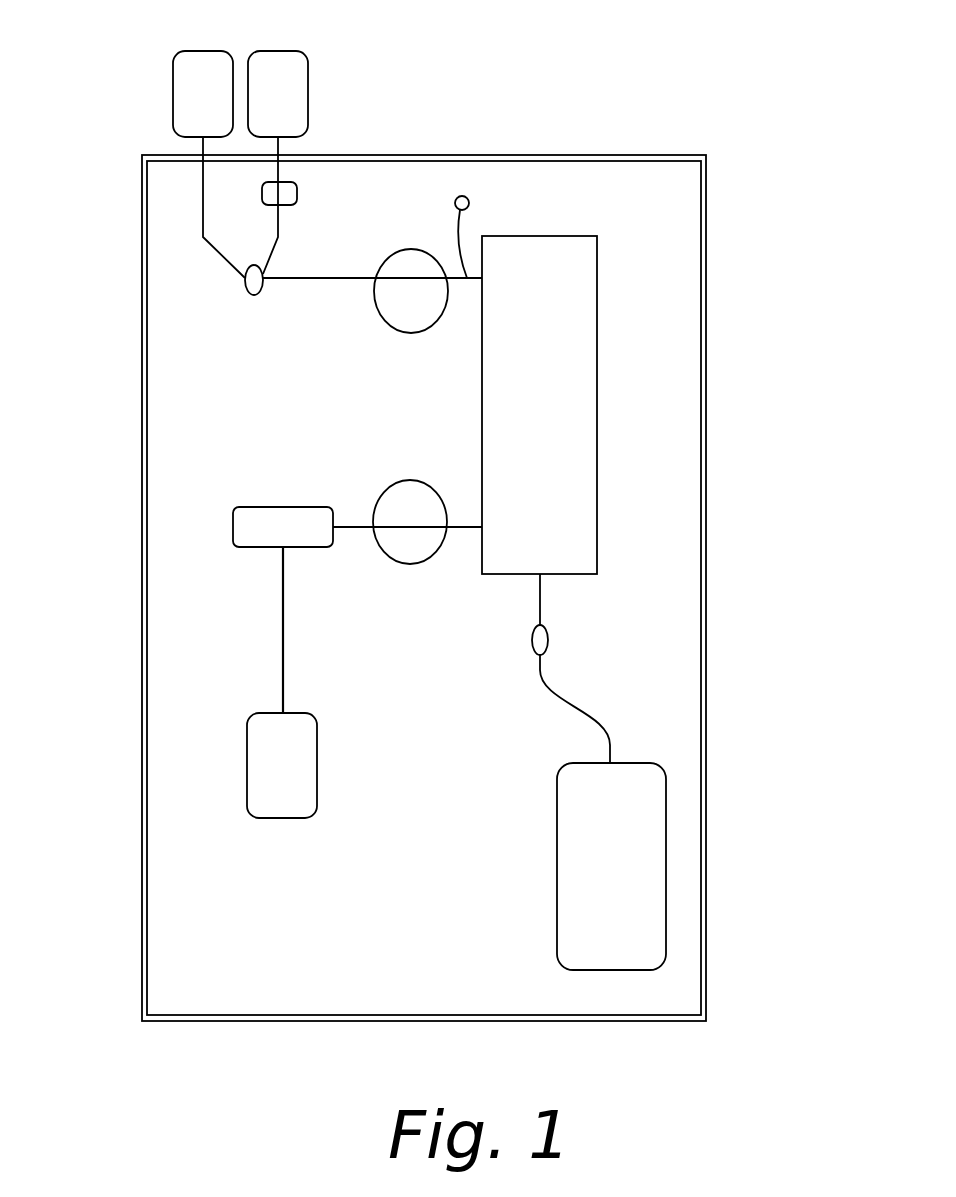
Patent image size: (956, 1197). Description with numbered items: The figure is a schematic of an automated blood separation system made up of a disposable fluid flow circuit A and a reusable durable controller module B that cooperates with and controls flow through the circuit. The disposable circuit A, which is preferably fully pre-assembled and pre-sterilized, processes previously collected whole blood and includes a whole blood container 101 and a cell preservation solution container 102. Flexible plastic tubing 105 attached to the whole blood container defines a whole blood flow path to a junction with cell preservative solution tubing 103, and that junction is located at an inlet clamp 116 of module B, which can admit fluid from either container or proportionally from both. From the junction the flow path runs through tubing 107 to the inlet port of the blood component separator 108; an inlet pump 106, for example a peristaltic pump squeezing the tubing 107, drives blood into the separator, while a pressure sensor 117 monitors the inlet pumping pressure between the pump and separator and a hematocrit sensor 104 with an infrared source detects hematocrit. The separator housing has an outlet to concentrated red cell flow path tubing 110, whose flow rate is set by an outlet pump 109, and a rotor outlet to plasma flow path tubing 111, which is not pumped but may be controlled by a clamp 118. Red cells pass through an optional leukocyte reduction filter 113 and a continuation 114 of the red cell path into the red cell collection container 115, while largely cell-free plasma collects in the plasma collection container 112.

The disposable fluid flow circuit A is at (247, 70).
The reusable durable controller module B is at (677, 491).
The whole blood container 101 is at (308, 77).
The cell preservation solution container 102 is at (173, 77).
The cell preservative solution tubing 103 is at (203, 200).
The hematocrit sensor 104 is at (297, 190).
The flexible plastic tubing 105 is at (278, 225).
The inlet pump 106 is at (408, 333).
The tubing 107 is at (325, 278).
The blood component separator 108 is at (597, 342).
The outlet pump 109 is at (404, 564).
The concentrated red cell flow path tubing 110 is at (298, 507).
The plasma flow path tubing 111 is at (540, 598).
The plasma collection container 112 is at (557, 854).
The leukocyte reduction filter 113 is at (233, 517).
The continuation of the concentrated red cell flow path 114 is at (283, 658).
The red cell collection container 115 is at (317, 755).
The inlet clamp 116 is at (254, 295).
The pressure sensor 117 is at (469, 199).
The clamp 118 is at (532, 640).